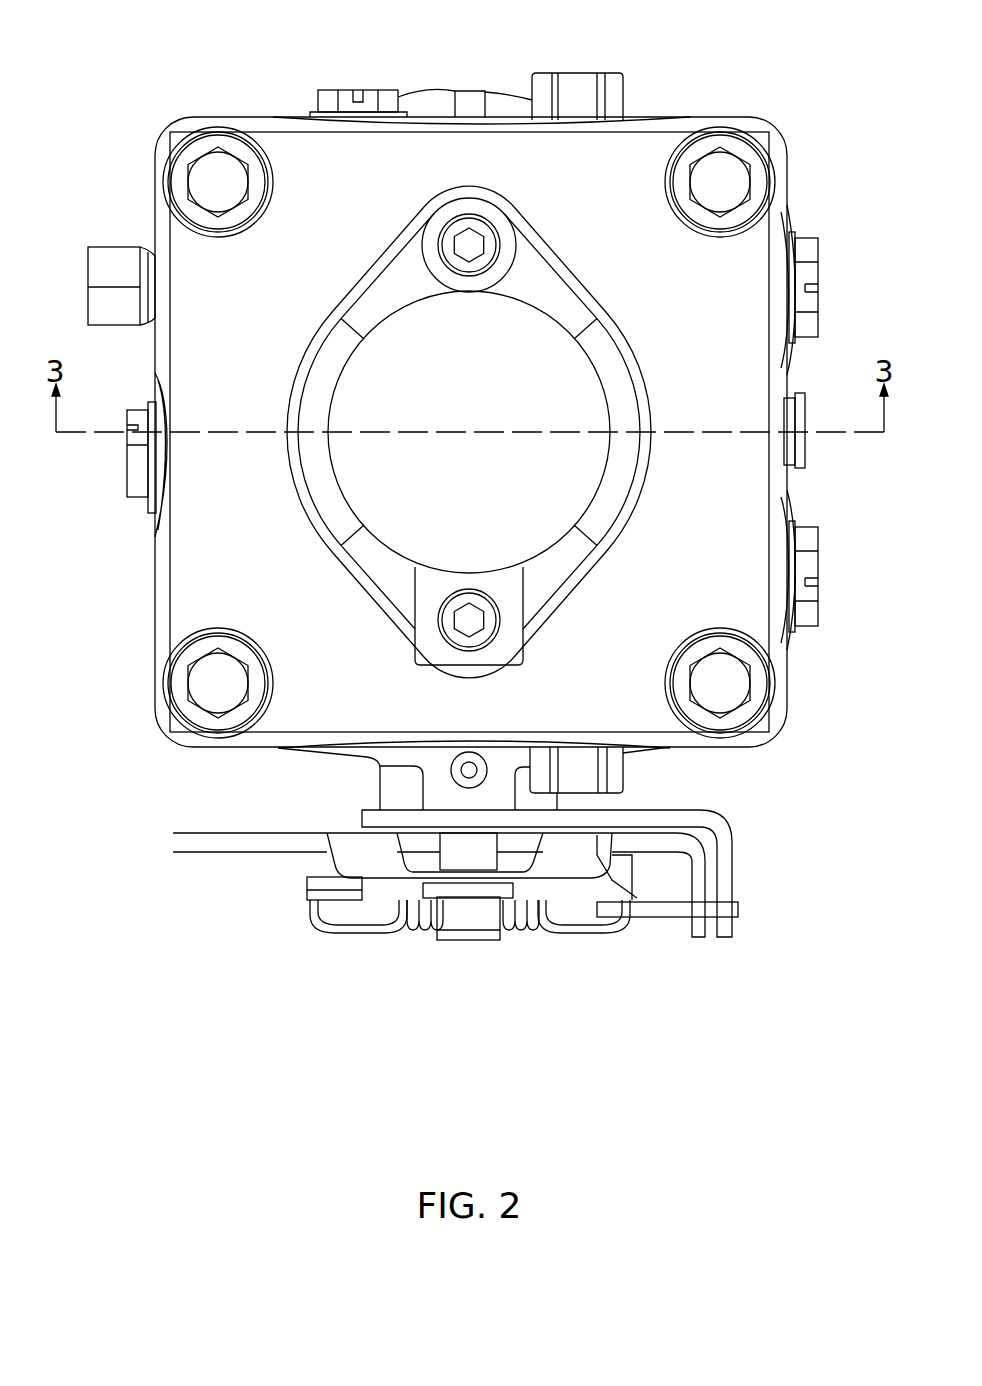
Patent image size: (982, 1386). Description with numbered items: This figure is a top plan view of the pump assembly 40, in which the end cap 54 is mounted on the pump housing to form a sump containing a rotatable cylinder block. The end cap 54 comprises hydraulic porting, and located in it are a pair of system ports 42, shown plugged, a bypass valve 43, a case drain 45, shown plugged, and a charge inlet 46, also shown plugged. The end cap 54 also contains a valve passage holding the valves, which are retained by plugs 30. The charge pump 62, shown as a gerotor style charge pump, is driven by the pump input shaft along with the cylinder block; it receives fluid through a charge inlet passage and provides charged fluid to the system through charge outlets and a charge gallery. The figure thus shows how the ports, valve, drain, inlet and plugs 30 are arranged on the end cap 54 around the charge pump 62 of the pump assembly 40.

The pump assembly 40 is at (128, 78).
The plug 30 is at (600, 73).
The case drain 45 is at (382, 90).
The bypass valve 43 is at (115, 247).
The system port 42 is at (816, 250).
The charge inlet 46 is at (128, 505).
The end cap 54 is at (692, 328).
The charge pump 62 is at (456, 370).